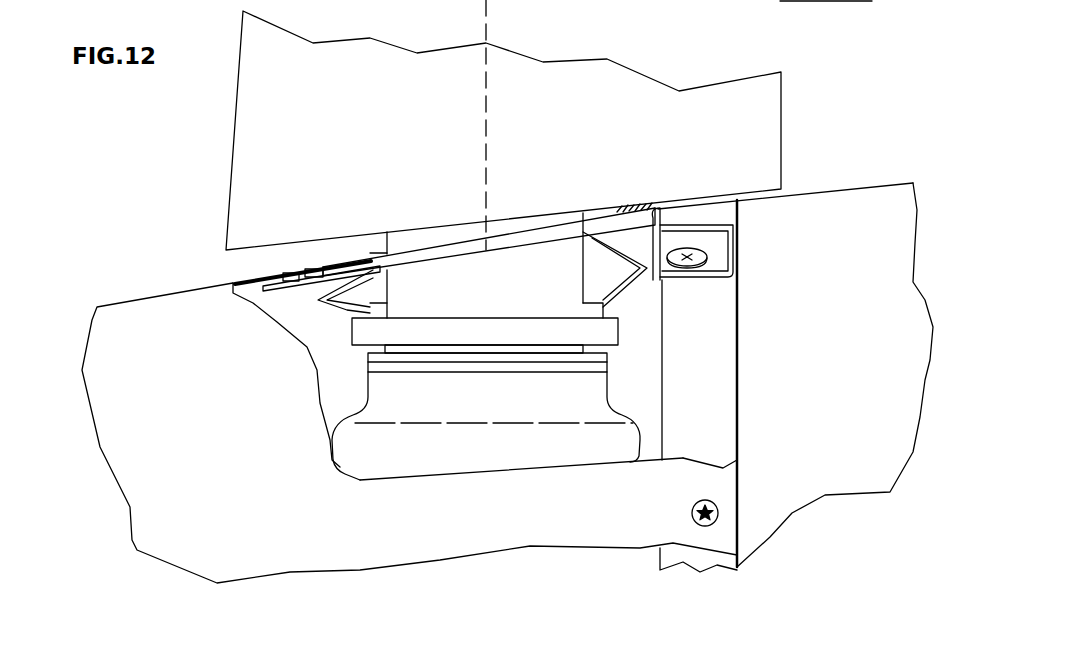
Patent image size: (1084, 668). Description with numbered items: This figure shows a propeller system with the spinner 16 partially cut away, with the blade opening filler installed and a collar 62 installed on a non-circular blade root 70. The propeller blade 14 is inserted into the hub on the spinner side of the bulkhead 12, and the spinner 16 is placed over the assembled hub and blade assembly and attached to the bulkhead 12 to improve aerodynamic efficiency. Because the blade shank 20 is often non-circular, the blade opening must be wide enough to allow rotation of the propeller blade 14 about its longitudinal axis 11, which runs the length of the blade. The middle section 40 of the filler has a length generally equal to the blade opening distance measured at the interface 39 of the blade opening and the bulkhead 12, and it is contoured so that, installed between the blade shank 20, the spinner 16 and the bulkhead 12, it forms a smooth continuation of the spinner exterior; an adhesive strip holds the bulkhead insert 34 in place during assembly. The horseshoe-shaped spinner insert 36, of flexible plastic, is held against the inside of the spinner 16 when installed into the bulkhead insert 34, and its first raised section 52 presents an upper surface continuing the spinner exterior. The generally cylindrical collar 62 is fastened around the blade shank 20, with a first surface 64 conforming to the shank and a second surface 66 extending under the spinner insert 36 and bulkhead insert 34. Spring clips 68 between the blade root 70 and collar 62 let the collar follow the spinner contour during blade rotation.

The longitudinal axis 11 is at (466, 1).
The bulkhead 12 is at (877, 358).
The propeller blade 14 is at (317, 116).
The spinner 16 is at (172, 480).
The blade shank 20 is at (514, 230).
The bulkhead insert 34 is at (711, 196).
The spinner insert 36 is at (357, 250).
The interface 39 is at (739, 503).
The middle section 40 is at (729, 195).
The first raised section 52 is at (353, 252).
The collar 62 is at (457, 238).
The first surface 64 is at (566, 228).
The second surface 66 is at (647, 217).
The spring clips 68 is at (346, 305).
The blade root 70 is at (612, 344).